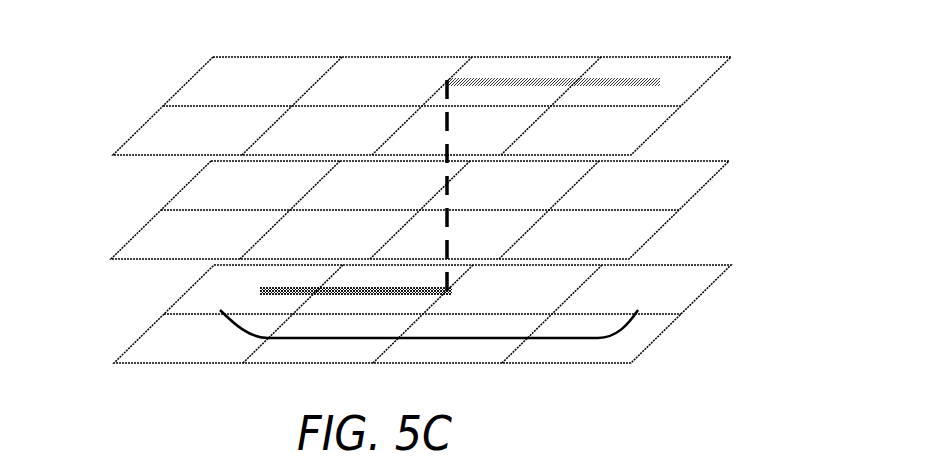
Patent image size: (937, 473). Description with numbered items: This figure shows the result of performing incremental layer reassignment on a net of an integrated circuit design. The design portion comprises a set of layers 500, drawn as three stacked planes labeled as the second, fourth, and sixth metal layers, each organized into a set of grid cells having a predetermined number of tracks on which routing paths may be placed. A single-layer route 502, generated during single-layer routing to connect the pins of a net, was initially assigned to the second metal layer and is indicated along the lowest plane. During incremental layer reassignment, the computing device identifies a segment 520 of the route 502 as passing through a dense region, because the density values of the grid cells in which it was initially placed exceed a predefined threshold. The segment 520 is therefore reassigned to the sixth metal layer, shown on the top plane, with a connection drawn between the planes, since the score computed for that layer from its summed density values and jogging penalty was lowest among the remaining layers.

The set of layers 500 is at (456, 203).
The single-layer route 502 is at (429, 338).
The segment of the route 520 is at (550, 78).